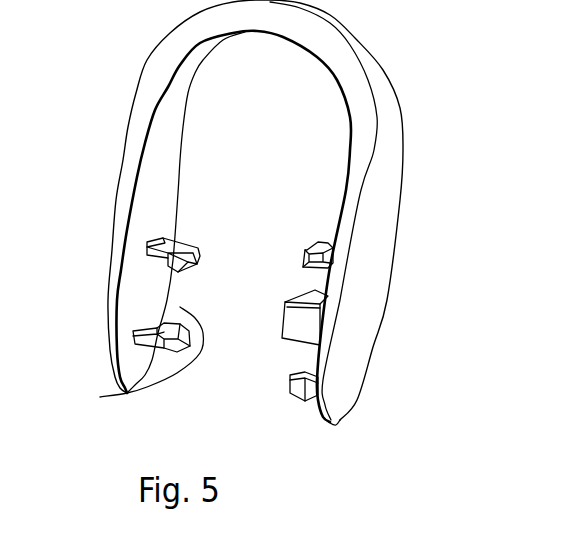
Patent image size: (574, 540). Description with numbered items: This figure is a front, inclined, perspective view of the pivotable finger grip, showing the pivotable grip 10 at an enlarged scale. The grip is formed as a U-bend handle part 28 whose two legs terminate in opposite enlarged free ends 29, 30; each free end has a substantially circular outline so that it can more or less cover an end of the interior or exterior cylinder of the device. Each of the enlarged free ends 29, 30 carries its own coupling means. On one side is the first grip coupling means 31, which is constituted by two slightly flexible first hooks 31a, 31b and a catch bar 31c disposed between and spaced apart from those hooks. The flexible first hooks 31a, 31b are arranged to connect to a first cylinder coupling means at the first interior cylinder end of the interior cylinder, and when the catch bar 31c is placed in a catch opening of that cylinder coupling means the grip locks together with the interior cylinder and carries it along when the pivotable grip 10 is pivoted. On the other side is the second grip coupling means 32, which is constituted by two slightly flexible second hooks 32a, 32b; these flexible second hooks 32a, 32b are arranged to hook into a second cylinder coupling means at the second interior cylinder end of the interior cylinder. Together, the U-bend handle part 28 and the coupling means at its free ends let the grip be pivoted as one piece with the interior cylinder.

The pivotable grip 10 is at (262, 250).
The U-bend handle part 28 is at (393, 130).
The enlarged free end 29 is at (369, 356).
The enlarged free end 30 is at (114, 290).
The first grip coupling means 31 is at (348, 356).
The flexible first hook 31a is at (330, 422).
The flexible first hook 31b is at (323, 258).
The catch bar 31c is at (300, 324).
The second grip coupling means 32 is at (112, 290).
The flexible second hook 32a is at (133, 338).
The flexible second hook 32b is at (143, 242).